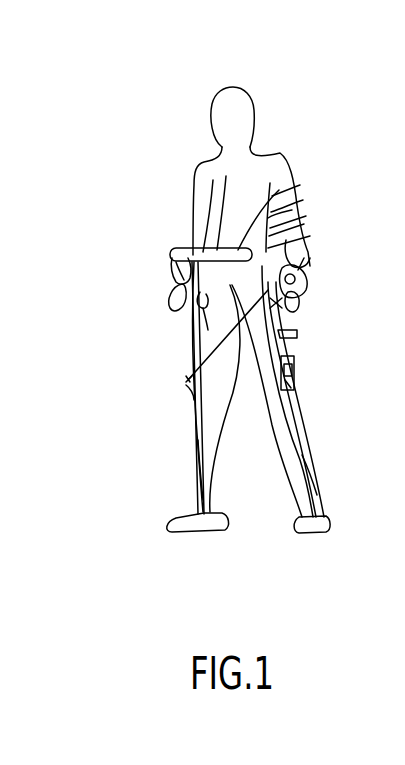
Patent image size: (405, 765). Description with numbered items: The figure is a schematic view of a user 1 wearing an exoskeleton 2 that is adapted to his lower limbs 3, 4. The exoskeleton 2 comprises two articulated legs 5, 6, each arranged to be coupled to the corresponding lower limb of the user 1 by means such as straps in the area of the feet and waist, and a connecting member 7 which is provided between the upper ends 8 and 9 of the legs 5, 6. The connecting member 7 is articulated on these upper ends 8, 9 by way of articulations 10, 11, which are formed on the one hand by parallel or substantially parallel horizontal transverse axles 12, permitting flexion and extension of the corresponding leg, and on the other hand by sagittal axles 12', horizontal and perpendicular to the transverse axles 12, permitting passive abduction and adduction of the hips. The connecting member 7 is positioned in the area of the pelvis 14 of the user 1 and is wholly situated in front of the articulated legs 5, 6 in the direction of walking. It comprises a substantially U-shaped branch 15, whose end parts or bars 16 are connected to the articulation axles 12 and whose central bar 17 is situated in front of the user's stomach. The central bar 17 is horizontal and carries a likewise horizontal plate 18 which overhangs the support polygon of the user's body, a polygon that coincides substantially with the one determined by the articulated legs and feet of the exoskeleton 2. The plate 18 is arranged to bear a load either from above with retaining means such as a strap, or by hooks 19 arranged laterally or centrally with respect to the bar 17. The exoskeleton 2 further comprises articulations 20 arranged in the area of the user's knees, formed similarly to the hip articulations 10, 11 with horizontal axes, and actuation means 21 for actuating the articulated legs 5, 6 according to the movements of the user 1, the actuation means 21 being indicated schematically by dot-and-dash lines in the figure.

The user 1 is at (288, 142).
The exoskeleton 2 is at (326, 372).
The lower limb 3 is at (218, 447).
The lower limb 4 is at (290, 467).
The articulated leg 5 is at (187, 386).
The articulated leg 6 is at (297, 334).
The connecting member 7 is at (285, 174).
The upper end 8 is at (200, 316).
The upper end 9 is at (230, 280).
The articulation 10 is at (170, 291).
The articulation 11 is at (292, 250).
The horizontal transverse axle 12 is at (259, 333).
The sagittal axle 12' is at (222, 243).
The pelvis 14 is at (196, 308).
The U-shaped branch 15 is at (290, 197).
The end part 16 is at (293, 222).
The central bar 17 is at (212, 213).
The plate 18 is at (190, 250).
The hook 19 is at (172, 263).
The articulation 20 is at (296, 388).
The actuation means 21 is at (302, 306).